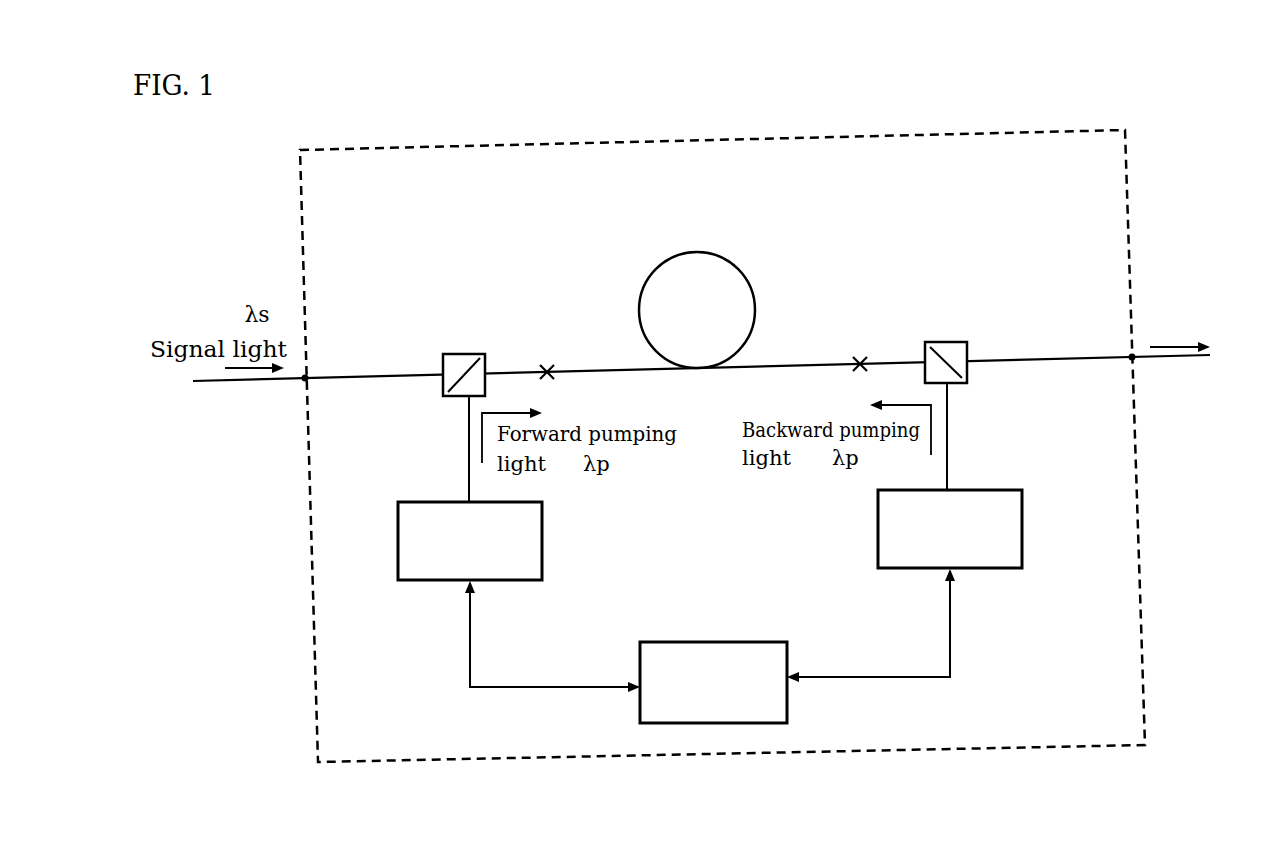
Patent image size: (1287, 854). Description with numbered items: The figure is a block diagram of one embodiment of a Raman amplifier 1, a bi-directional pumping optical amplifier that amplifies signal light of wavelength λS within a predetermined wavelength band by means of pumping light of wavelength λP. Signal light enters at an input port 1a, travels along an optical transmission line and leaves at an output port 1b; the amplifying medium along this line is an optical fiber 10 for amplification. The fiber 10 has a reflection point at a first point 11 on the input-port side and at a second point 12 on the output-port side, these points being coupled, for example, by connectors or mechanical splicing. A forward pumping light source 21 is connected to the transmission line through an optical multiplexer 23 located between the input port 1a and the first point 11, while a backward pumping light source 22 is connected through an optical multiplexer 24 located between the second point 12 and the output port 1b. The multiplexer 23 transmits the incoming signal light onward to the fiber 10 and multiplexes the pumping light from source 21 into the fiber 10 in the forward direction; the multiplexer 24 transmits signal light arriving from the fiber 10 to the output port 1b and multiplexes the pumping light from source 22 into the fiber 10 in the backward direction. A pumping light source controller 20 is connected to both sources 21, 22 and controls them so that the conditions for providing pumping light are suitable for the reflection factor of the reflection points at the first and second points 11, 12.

The Raman amplifier 1 is at (978, 130).
The input port 1a is at (305, 381).
The output port 1b is at (1133, 360).
The optical fiber 10 is at (717, 253).
The first point 11 is at (547, 370).
The second point 12 is at (860, 362).
The pumping light source controller 20 is at (735, 642).
The forward pumping light source 21 is at (543, 540).
The backward pumping light source 22 is at (1022, 529).
The optical multiplexer 23 is at (462, 353).
The optical multiplexer 24 is at (942, 342).